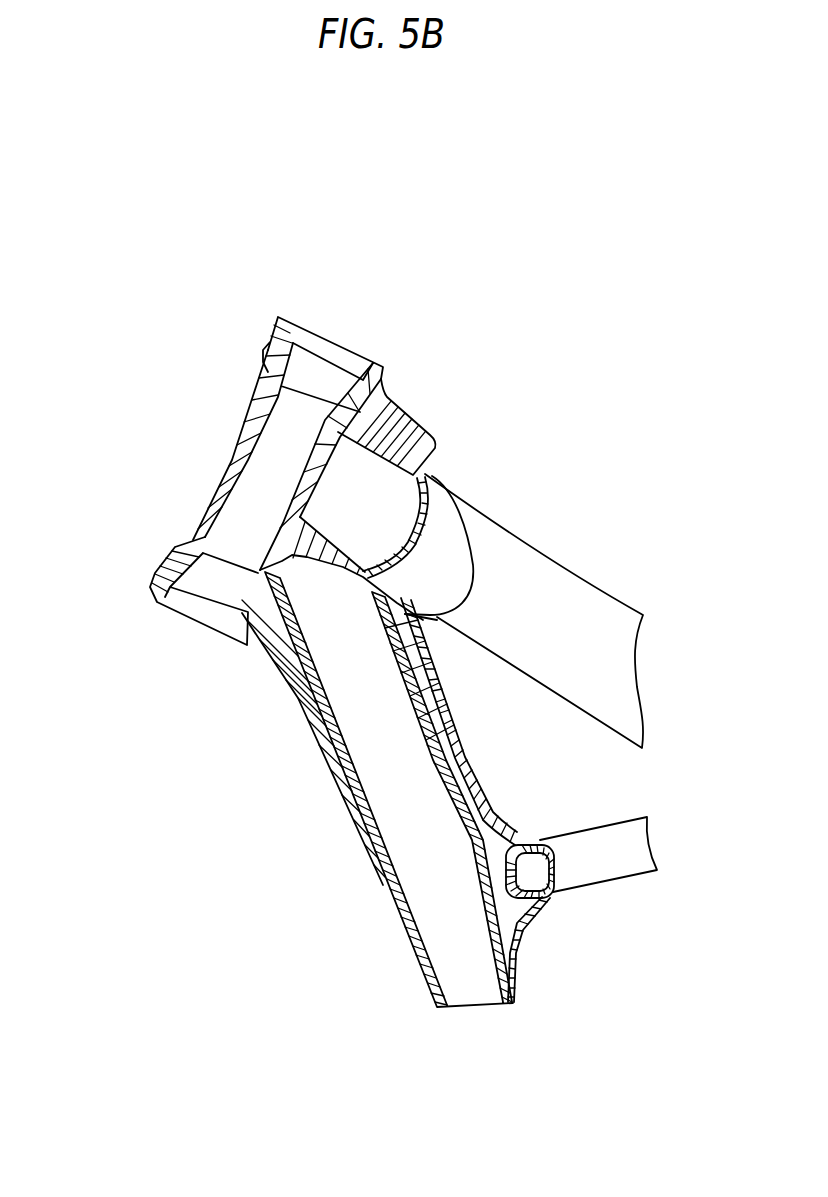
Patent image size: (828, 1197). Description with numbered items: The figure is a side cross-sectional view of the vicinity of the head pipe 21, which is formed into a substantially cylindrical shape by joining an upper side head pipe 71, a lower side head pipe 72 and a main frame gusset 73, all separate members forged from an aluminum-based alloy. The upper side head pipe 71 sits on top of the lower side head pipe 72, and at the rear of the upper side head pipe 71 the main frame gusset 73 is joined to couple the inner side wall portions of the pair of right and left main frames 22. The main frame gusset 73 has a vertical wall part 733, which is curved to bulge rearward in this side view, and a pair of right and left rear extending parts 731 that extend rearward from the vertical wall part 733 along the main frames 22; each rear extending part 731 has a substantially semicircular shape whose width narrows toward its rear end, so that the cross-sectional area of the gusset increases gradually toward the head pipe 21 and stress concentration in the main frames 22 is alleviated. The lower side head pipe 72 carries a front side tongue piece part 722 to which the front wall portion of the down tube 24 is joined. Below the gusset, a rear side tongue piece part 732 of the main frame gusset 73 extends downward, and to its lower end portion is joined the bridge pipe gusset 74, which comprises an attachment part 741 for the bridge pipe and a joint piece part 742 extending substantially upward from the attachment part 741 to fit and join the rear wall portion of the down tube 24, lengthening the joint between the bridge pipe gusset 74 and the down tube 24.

The head pipe 21 is at (266, 310).
The main frame 22 is at (632, 580).
The down tube 24 is at (365, 789).
The upper side head pipe 71 is at (248, 427).
The lower side head pipe 72 is at (152, 596).
The front side tongue piece part 722 is at (320, 740).
The main frame gusset 73 is at (485, 533).
The rear extending part 731 is at (457, 572).
The rear side tongue piece part 732 is at (410, 620).
The vertical wall part 733 is at (430, 515).
The bridge pipe gusset 74 is at (529, 800).
The attachment part 741 is at (537, 902).
The joint piece part 742 is at (463, 750).